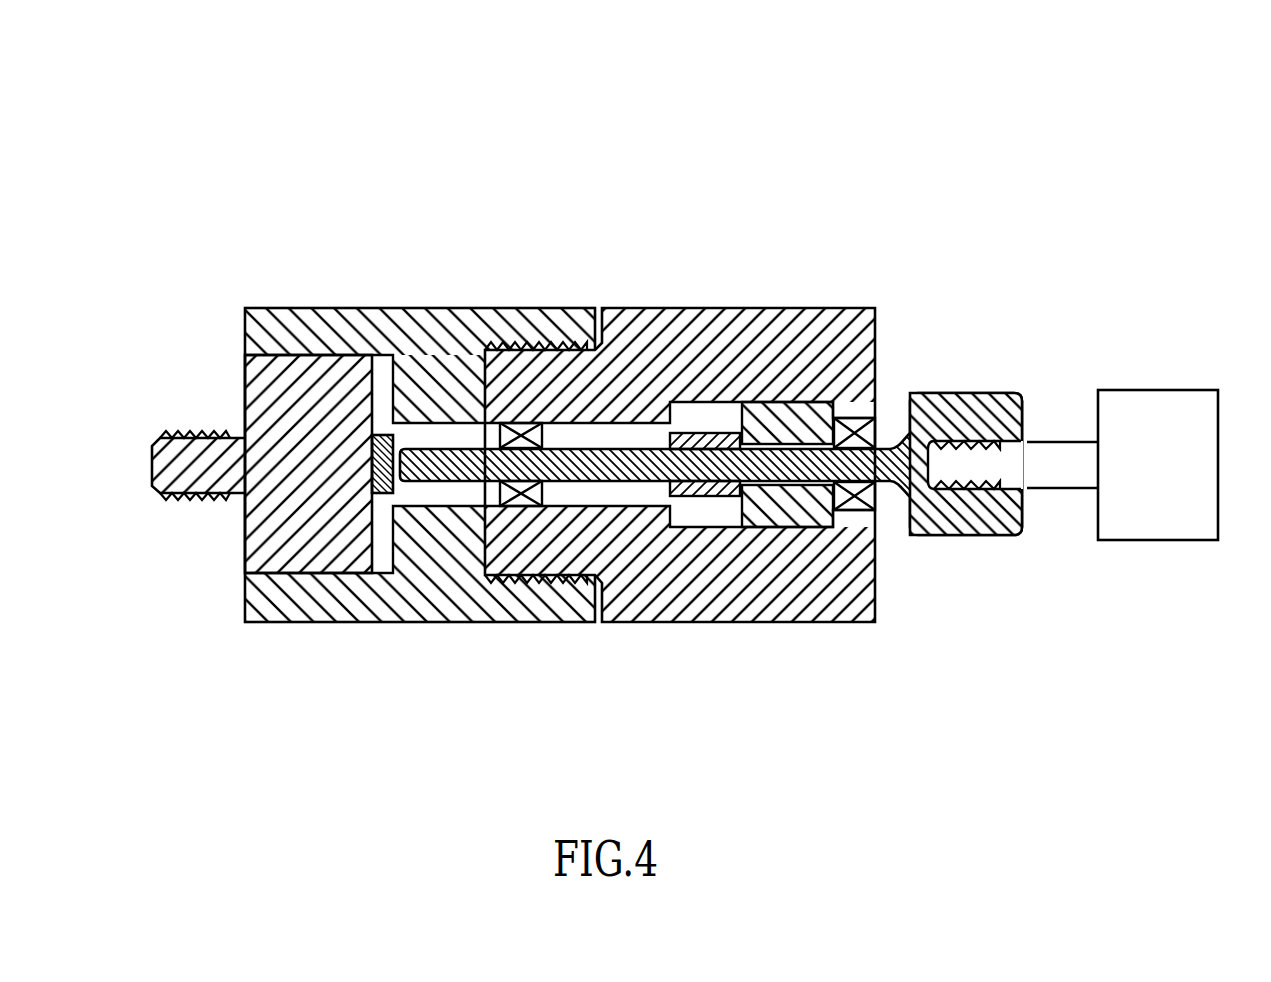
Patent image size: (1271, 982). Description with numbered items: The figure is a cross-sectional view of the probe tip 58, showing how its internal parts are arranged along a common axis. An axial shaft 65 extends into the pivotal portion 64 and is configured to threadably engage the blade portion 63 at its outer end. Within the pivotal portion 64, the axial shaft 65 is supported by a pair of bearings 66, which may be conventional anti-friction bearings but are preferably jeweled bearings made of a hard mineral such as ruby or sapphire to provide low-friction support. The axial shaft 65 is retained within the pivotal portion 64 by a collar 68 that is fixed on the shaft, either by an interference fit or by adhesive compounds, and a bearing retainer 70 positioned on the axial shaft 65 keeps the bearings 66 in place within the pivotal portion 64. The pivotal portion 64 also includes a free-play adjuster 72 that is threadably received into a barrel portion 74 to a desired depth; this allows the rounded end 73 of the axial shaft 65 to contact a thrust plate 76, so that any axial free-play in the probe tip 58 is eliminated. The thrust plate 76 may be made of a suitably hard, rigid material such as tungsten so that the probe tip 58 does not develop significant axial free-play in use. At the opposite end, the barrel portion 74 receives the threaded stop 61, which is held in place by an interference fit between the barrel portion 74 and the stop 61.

The probe tip 58 is at (1095, 136).
The threaded stop 61 is at (192, 433).
The blade portion 63 is at (1146, 390).
The pivotal portion 64 is at (561, 469).
The axial shaft 65 is at (950, 393).
The bearings 66 is at (550, 423).
The collar 68 is at (714, 433).
The bearing retainer 70 is at (780, 402).
The free-play adjuster 72 is at (636, 308).
The rounded end 73 is at (399, 446).
The barrel portion 74 is at (278, 308).
The thrust plate 76 is at (382, 435).